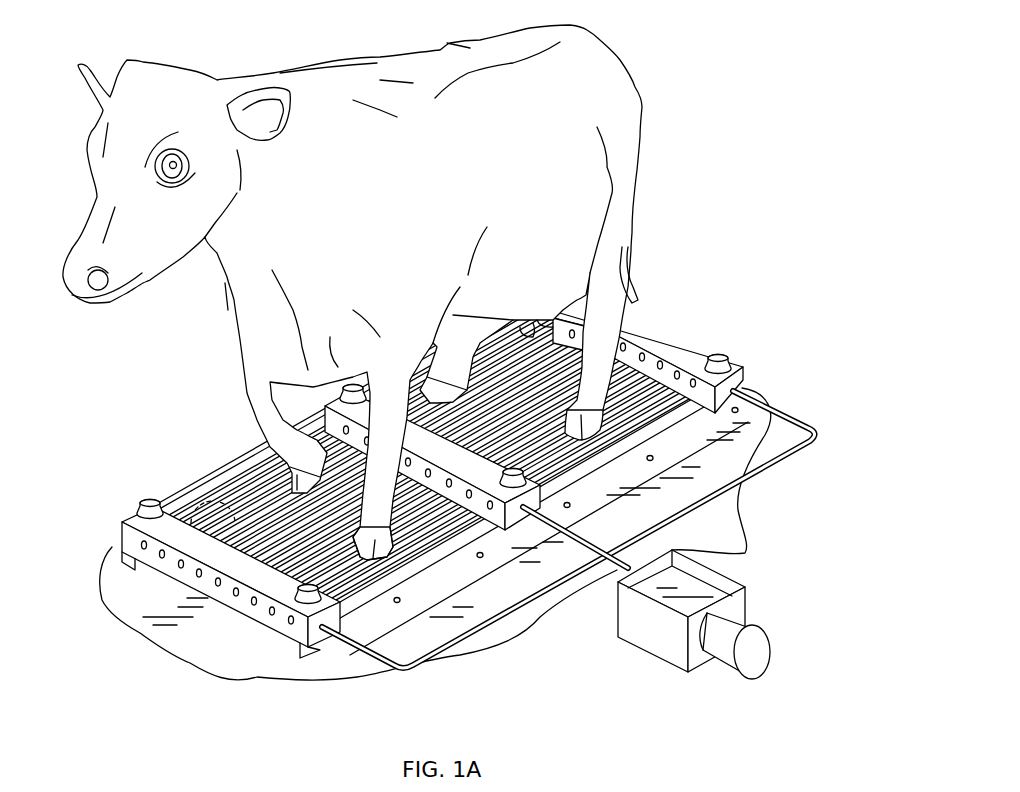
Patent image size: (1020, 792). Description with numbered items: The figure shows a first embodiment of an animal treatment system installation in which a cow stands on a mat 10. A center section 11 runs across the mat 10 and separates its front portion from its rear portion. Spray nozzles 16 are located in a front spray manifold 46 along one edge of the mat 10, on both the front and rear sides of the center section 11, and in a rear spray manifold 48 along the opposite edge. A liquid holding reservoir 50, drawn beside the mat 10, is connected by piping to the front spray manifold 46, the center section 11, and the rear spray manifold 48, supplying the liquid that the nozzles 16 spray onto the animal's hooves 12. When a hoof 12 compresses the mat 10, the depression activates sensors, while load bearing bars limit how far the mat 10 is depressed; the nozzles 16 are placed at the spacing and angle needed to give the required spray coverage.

The mat 10 is at (630, 440).
The center section 11 is at (548, 497).
The hoof 12 is at (387, 555).
The spray nozzle 16 is at (482, 508).
The front spray manifold 46 is at (262, 572).
The rear spray manifold 48 is at (653, 333).
The liquid holding reservoir 50 is at (652, 632).